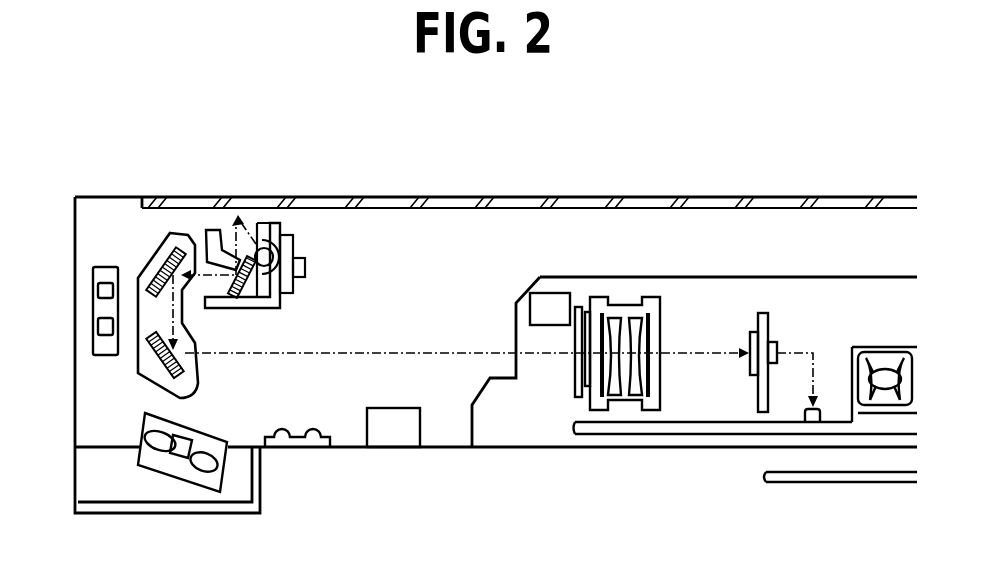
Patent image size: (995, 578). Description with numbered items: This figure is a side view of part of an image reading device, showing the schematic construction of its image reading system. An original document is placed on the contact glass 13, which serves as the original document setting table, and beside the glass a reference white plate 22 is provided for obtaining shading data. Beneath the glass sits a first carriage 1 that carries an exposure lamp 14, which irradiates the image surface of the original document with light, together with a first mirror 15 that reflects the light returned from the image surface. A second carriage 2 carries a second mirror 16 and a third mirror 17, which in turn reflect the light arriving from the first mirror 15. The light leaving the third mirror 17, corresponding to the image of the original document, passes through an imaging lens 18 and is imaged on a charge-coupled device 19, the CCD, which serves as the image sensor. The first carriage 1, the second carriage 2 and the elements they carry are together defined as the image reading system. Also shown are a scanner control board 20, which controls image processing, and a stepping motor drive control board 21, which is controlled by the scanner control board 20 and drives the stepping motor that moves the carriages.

The first carriage 1 is at (226, 300).
The second carriage 2 is at (152, 255).
The contact glass 13 is at (852, 198).
The exposure lamp 14 is at (262, 222).
The first mirror 15 is at (276, 308).
The second mirror 16 is at (178, 250).
The third mirror 17 is at (187, 369).
The imaging lens 18 is at (625, 297).
The charge-coupled device (CCD) 19 is at (763, 310).
The scanner control board 20 is at (727, 435).
The stepping motor drive control board 21 is at (820, 482).
The reference white plate 22 is at (202, 199).